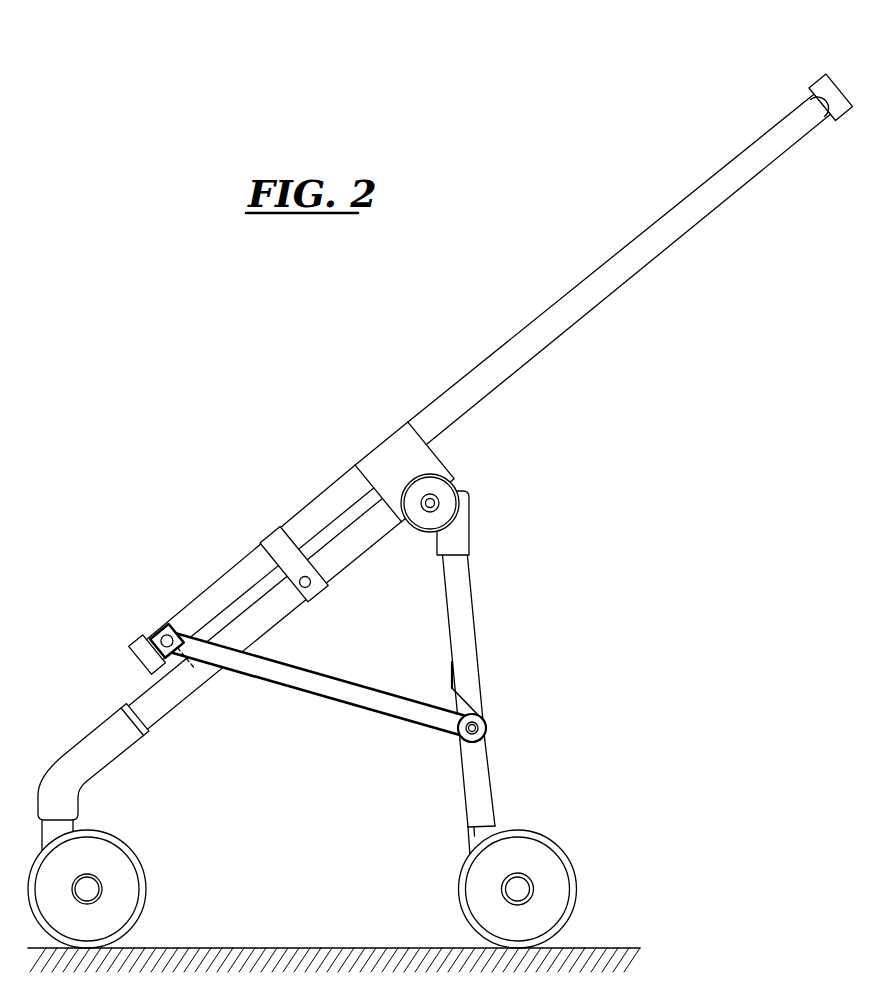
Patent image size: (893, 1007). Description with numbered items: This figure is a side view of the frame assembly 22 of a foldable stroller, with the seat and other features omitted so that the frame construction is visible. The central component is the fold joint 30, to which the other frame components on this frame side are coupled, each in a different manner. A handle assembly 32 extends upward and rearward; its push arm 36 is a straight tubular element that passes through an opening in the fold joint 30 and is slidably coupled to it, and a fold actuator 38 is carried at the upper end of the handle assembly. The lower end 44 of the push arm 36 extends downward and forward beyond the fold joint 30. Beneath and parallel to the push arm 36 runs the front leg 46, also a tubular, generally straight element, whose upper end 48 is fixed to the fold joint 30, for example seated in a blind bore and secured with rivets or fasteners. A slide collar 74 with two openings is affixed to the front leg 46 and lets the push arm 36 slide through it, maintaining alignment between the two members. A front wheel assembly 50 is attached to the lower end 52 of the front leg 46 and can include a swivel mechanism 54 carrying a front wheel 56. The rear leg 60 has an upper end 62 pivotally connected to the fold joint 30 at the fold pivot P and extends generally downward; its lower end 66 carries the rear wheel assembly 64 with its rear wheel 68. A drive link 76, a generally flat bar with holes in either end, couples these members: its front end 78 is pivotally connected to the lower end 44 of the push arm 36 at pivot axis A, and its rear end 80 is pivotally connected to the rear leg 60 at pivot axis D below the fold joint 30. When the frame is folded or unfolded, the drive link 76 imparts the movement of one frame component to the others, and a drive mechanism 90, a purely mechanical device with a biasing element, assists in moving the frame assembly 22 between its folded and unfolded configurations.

The frame assembly 22 is at (183, 458).
The fold joint 30 is at (408, 468).
The handle assembly 32 is at (728, 218).
The push arm 36 is at (615, 272).
The fold actuator 38 is at (824, 80).
The lower end of the push arm 44 is at (168, 618).
The front leg 46 is at (203, 670).
The upper end of the front leg 48 is at (392, 518).
The front wheel assembly 50 is at (150, 930).
The lower end of the front leg 52 is at (157, 720).
The swivel mechanism 54 is at (60, 828).
The front wheel 56 is at (120, 877).
The rear leg 60 is at (463, 632).
The upper end of the rear leg 62 is at (470, 562).
The rear wheel assembly 64 is at (547, 824).
The lower end of the rear leg 66 is at (492, 815).
The rear wheel 68 is at (568, 862).
The slide collar 74 is at (278, 538).
The drive link 76 is at (320, 696).
The front end of the drive link 78 is at (175, 647).
The rear end of the drive link 80 is at (473, 745).
The drive mechanism 90 is at (438, 737).
The pivot axis A is at (163, 640).
The pivot axis D is at (483, 720).
The fold pivot P is at (437, 503).